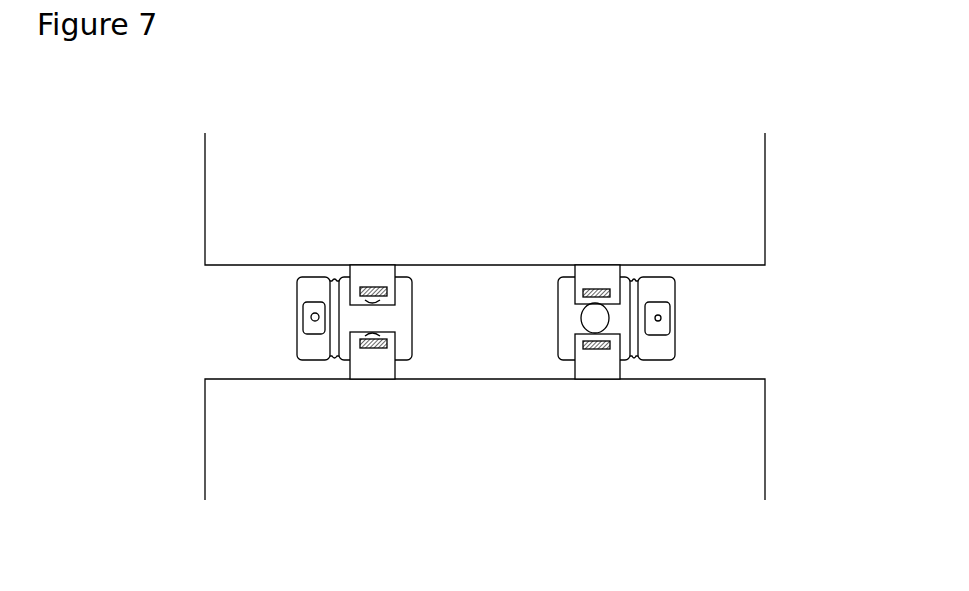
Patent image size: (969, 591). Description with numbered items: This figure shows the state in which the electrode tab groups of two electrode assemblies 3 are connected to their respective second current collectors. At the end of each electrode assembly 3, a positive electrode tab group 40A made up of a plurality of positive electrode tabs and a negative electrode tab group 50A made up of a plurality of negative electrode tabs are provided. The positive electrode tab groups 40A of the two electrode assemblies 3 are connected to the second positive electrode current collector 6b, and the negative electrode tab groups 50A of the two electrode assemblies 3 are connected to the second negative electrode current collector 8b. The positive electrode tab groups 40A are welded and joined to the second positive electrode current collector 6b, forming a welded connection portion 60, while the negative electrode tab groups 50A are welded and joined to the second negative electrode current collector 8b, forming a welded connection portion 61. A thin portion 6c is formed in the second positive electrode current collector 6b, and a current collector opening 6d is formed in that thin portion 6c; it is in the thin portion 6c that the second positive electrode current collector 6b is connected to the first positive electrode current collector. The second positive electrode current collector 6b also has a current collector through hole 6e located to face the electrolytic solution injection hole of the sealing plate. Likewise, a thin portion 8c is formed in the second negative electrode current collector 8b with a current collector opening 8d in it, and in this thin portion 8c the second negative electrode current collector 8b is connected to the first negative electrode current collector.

The electrode assembly 3 is at (727, 225).
The second negative electrode current collector 8b is at (300, 282).
The current collector opening 8d is at (303, 318).
The thin portion 8c is at (303, 333).
The negative electrode tab group 50A is at (370, 283).
The welded connection portion 61 is at (388, 290).
The second positive electrode current collector 6b is at (650, 283).
The current collector opening 6d is at (661, 318).
The thin portion 6c is at (668, 335).
The current collector through hole 6e is at (581, 322).
The positive electrode tab group 40A is at (594, 283).
The welded connection portion 60 is at (583, 290).